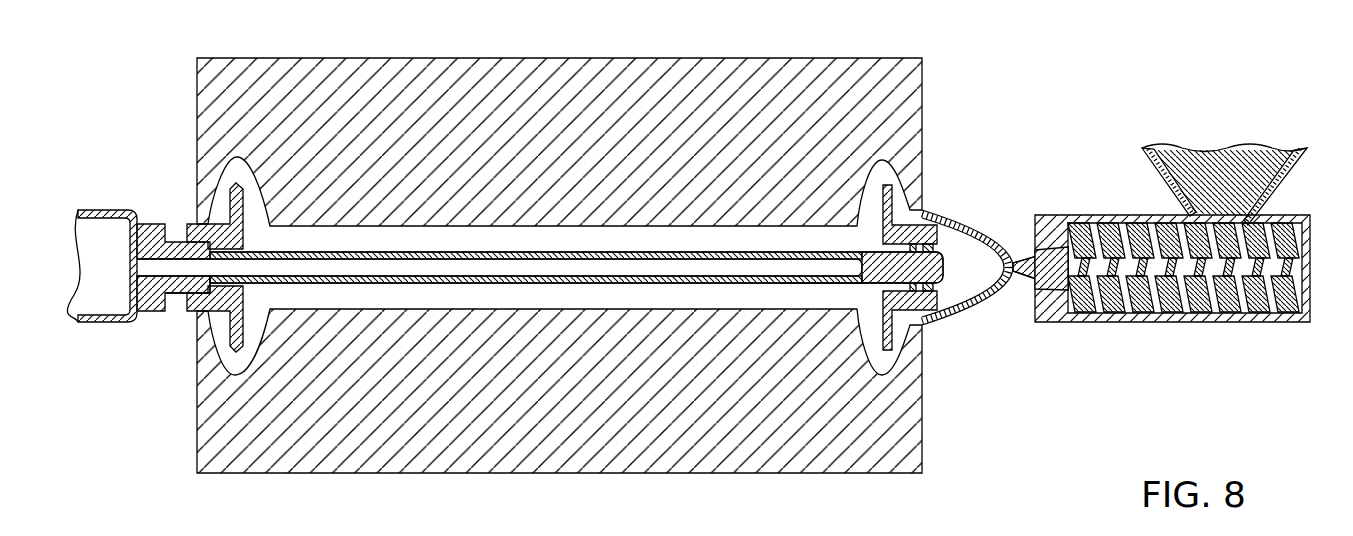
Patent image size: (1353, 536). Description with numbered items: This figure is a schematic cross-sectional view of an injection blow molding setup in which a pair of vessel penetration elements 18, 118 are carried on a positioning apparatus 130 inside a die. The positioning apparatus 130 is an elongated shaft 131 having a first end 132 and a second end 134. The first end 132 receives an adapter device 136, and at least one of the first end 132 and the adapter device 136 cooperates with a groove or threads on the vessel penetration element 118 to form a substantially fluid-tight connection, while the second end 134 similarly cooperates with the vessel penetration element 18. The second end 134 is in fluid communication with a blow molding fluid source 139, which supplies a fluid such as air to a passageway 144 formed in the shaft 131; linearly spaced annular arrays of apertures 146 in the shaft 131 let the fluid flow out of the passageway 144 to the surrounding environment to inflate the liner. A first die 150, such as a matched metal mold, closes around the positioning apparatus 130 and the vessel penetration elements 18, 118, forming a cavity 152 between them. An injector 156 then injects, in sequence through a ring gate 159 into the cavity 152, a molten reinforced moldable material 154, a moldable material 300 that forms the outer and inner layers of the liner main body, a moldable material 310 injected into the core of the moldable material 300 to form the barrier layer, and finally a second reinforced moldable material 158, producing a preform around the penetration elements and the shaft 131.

The vessel penetration element 18 is at (192, 223).
The positioning apparatus 130 is at (145, 313).
The elongated shaft 131 is at (353, 252).
The second end 134 is at (165, 295).
The blow molding fluid source 139 is at (102, 308).
The passageway 144 is at (635, 268).
The apertures 146 is at (472, 282).
The first die 150 is at (918, 105).
The cavity 152 is at (825, 295).
The vessel penetration element 118 is at (936, 212).
The reinforced moldable material 154 is at (943, 326).
The first end 132 is at (946, 243).
The ring gate 159 is at (1007, 242).
The adapter device 136 is at (975, 298).
The moldable material 300 is at (1085, 215).
The injector 156 is at (1220, 320).
The moldable material 310 is at (1280, 215).
The reinforced moldable material 158 is at (1167, 177).